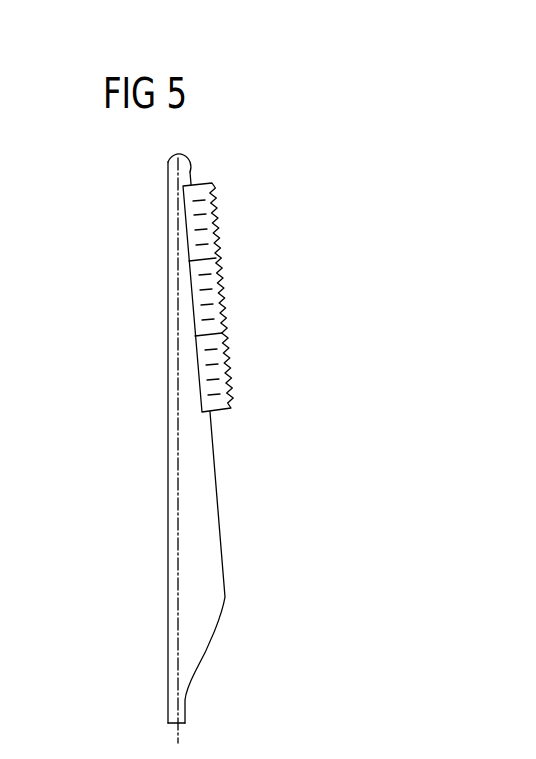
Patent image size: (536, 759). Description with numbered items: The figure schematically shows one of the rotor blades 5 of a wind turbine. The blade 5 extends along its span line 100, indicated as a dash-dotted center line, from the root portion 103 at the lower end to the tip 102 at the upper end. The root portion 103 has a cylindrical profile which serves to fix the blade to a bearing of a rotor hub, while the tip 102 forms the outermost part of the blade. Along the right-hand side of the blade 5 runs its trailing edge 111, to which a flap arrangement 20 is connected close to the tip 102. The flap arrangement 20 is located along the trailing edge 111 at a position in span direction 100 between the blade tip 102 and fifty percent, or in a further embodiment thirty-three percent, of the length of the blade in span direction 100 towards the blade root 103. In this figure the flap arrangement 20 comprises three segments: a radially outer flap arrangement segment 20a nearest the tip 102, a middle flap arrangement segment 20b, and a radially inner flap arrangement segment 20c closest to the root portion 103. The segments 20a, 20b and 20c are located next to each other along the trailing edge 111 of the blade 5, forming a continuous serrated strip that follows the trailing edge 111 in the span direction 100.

The rotor blade 5 is at (154, 302).
The flap arrangement 20 is at (259, 403).
The radially outer flap arrangement segment 20a is at (212, 223).
The middle flap arrangement segment 20b is at (215, 297).
The radially inner flap arrangement segment 20c is at (217, 373).
The span line 100 is at (178, 472).
The tip 102 is at (175, 150).
The root portion 103 is at (172, 723).
The trailing edge 111 is at (222, 517).